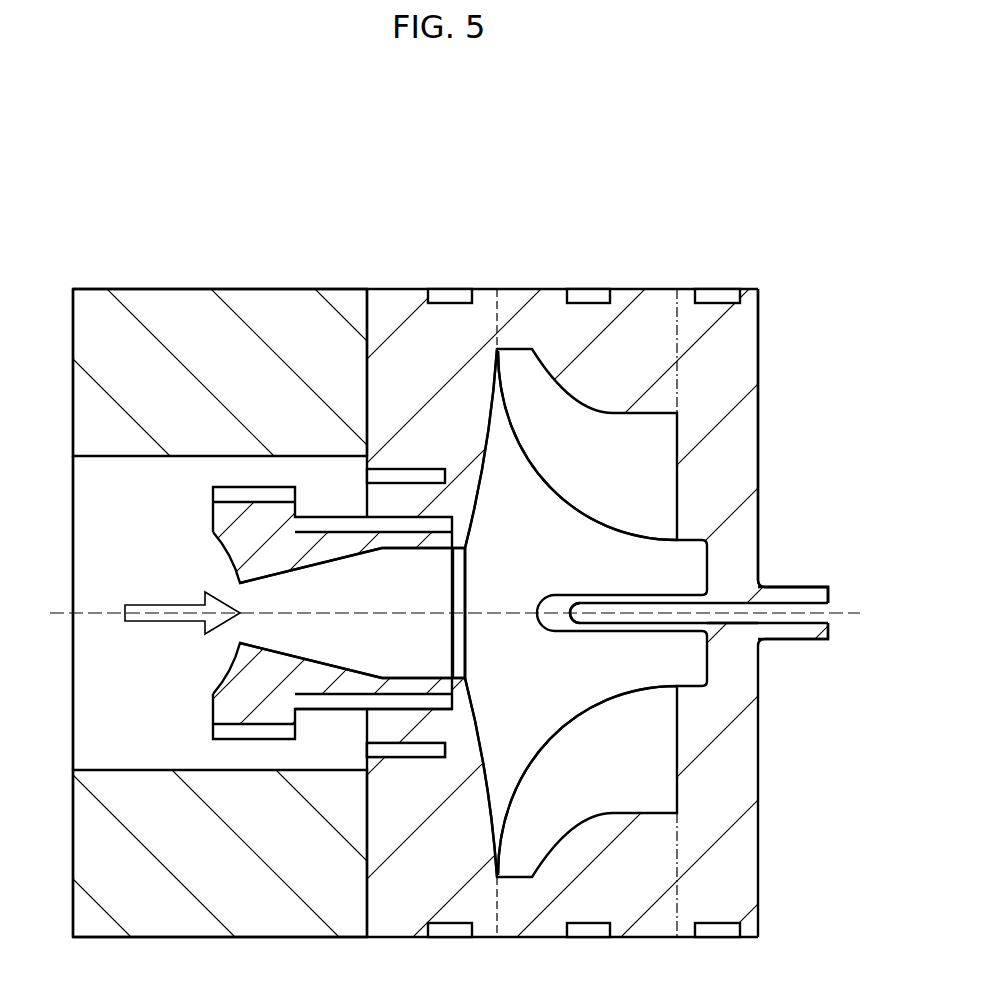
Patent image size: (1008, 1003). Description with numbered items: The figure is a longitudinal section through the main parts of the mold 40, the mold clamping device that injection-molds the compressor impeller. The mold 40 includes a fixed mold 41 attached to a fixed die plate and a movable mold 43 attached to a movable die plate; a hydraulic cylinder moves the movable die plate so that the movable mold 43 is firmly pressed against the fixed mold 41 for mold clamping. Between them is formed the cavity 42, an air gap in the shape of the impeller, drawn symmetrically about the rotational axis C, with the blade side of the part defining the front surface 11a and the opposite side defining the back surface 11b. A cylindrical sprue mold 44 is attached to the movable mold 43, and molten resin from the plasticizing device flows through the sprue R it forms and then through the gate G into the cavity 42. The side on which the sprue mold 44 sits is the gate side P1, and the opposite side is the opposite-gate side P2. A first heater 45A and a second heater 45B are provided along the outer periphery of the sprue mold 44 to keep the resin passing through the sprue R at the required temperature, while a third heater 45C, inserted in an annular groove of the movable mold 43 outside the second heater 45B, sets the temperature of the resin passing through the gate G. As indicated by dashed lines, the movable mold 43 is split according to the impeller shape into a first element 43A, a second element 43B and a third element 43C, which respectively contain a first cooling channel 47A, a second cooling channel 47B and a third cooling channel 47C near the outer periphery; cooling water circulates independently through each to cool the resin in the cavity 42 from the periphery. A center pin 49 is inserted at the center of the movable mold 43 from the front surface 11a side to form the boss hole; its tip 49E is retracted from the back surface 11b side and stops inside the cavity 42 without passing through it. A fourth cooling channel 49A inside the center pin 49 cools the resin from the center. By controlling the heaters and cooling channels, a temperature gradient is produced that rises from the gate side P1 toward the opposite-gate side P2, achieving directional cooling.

The mold 40 is at (615, 189).
The fixed mold 41 is at (215, 289).
The cavity 42 is at (536, 551).
The movable mold 43 is at (522, 282).
The first element 43A is at (402, 289).
The second element 43B is at (565, 289).
The third element 43C is at (688, 289).
The sprue mold 44 is at (318, 517).
The first heater 45A is at (248, 742).
The second heater 45B is at (343, 710).
The third heater 45C is at (412, 758).
The first cooling channel 47A is at (445, 937).
The second cooling channel 47B is at (588, 937).
The third cooling channel 47C is at (713, 937).
The center pin 49 is at (667, 590).
The fourth cooling channel 49A is at (790, 607).
The tip 49E is at (538, 608).
The front surface 11a is at (563, 507).
The back surface 11b is at (478, 478).
The gate side P1 is at (468, 615).
The opposite-gate side P2 is at (745, 625).
The gate G is at (458, 657).
The sprue R is at (352, 654).
The rotational axis C is at (846, 612).